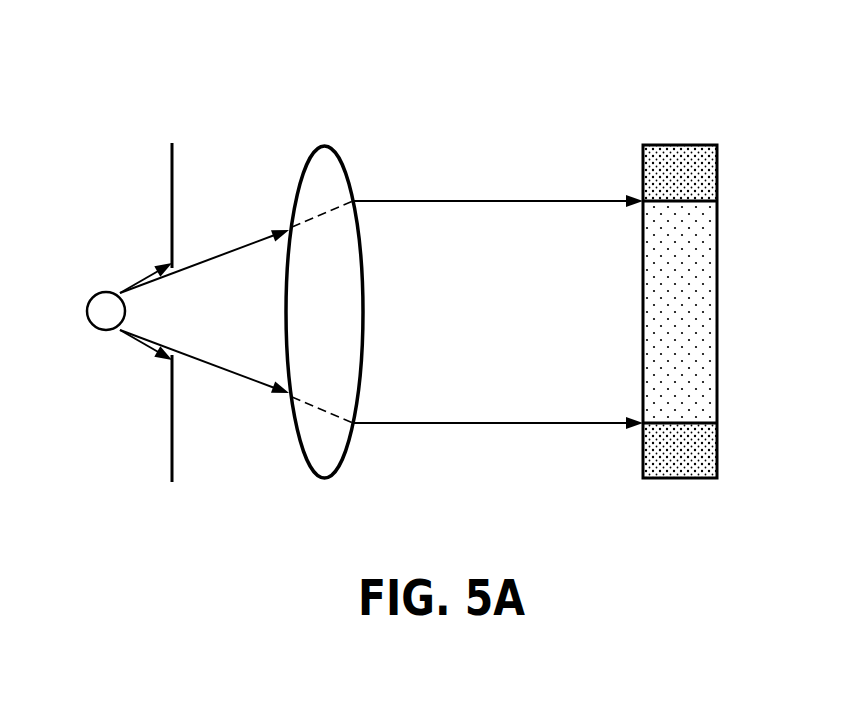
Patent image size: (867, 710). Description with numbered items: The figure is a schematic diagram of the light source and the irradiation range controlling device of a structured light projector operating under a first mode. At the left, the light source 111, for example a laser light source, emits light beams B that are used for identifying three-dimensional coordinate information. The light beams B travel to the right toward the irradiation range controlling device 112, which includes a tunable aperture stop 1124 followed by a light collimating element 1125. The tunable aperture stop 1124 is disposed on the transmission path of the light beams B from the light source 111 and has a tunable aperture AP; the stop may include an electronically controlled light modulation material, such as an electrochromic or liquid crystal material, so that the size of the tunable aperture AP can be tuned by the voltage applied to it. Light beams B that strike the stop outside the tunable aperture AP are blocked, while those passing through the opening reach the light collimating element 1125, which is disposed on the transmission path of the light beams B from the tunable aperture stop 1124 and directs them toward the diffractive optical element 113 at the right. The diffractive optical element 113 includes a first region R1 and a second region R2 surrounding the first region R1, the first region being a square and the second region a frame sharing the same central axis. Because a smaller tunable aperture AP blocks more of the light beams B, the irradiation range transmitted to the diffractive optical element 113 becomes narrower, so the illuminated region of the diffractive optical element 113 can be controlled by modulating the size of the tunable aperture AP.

The light source 111 is at (94, 304).
The irradiation range controlling device 112 is at (323, 84).
The tunable aperture stop 1124 is at (173, 165).
The light collimating element 1125 is at (306, 160).
The diffractive optical element 113 is at (715, 273).
The light beam B is at (137, 279).
The tunable aperture AP is at (183, 319).
The first region R1 is at (708, 324).
The second region R2 is at (708, 182).